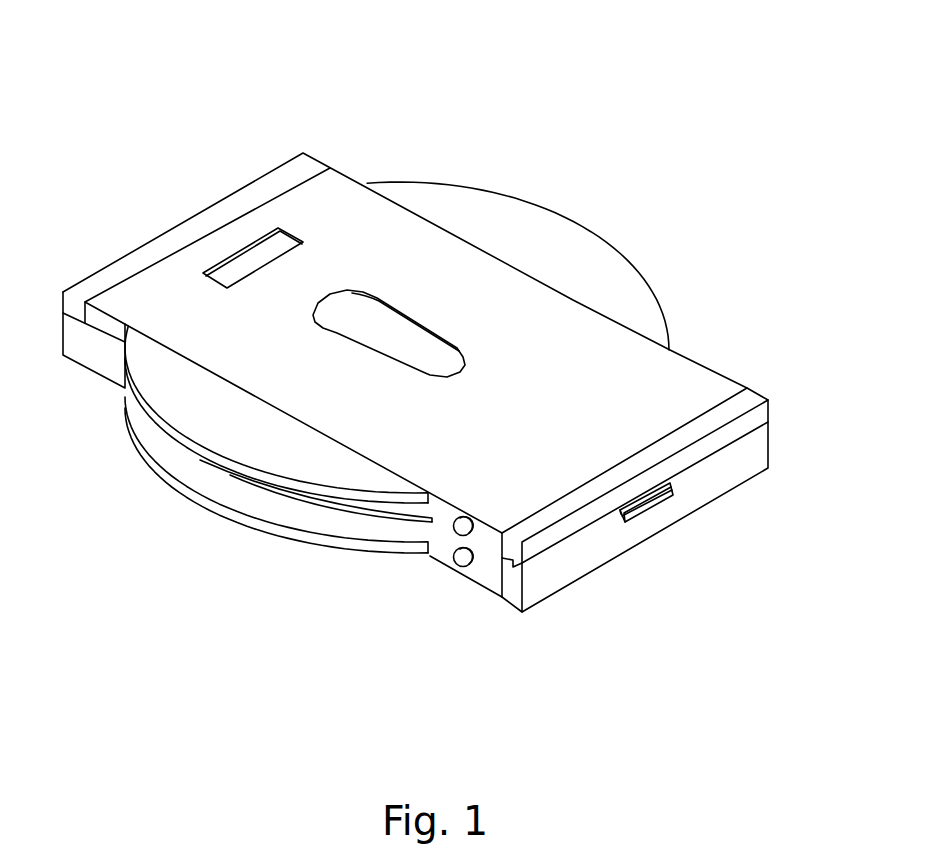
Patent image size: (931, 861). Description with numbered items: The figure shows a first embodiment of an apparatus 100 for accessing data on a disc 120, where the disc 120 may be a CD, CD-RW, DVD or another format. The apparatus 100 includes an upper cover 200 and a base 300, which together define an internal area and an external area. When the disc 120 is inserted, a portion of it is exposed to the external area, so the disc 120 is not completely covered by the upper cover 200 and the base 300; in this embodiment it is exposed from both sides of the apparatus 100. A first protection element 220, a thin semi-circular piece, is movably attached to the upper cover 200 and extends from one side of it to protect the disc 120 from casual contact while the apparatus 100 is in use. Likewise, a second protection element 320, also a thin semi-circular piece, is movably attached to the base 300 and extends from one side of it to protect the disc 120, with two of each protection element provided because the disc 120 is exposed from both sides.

The apparatus 100 is at (321, 185).
The upper cover 200 is at (665, 388).
The first protection element 220 is at (165, 393).
The disc 120 is at (378, 510).
The second protection element 320 is at (247, 507).
The base 300 is at (450, 543).